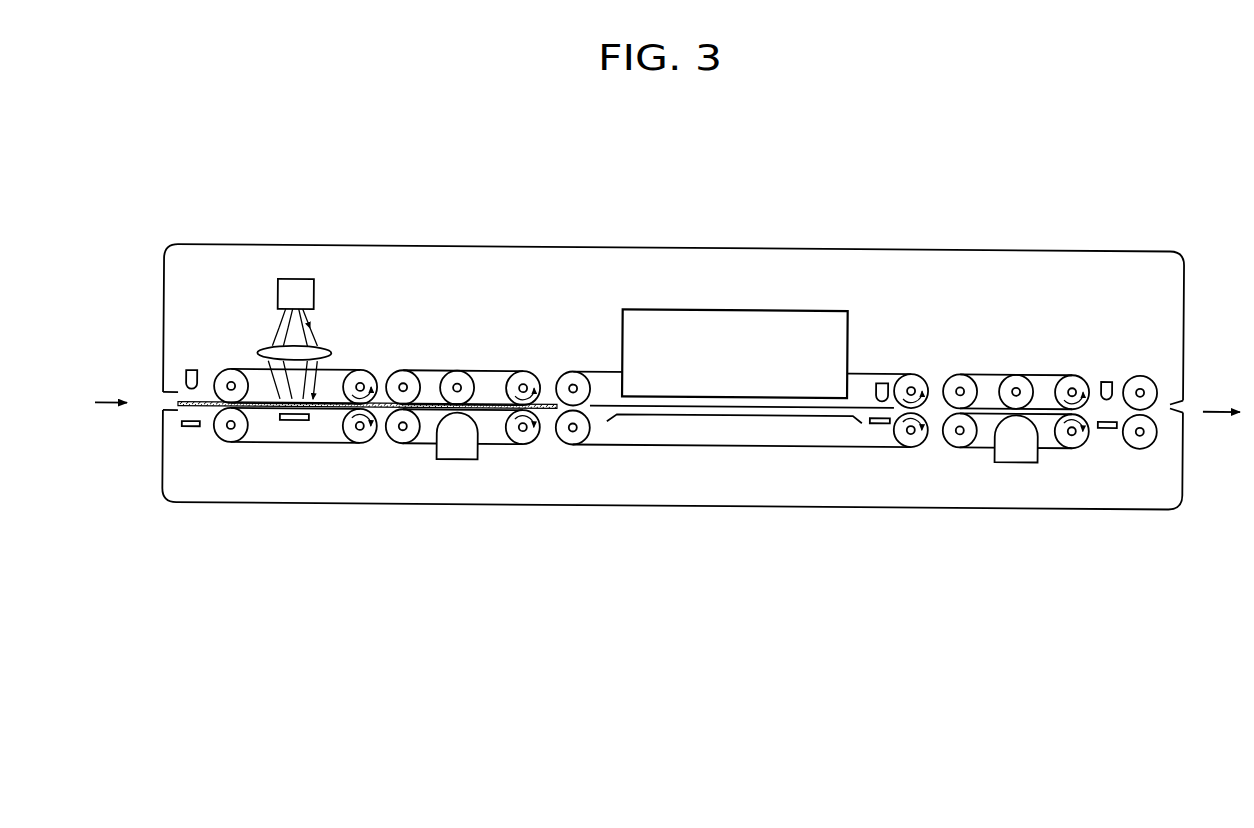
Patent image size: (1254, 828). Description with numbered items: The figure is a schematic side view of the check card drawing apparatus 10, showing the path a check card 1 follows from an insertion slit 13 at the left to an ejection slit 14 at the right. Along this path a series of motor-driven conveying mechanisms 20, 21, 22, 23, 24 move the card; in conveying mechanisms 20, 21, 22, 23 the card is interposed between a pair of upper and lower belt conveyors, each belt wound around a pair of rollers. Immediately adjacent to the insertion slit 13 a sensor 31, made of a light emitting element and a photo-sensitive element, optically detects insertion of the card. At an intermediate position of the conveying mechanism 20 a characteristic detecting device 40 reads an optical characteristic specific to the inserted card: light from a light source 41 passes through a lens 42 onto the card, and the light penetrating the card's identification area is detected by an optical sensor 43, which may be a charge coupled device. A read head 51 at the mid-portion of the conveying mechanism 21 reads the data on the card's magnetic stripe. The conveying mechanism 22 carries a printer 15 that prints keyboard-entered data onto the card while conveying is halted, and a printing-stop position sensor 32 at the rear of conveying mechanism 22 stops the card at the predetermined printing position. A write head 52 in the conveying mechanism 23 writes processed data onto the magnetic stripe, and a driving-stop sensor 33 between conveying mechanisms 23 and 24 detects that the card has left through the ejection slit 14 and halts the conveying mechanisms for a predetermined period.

The check card 1 is at (546, 405).
The check card drawing apparatus 10 is at (892, 246).
The insertion slit 13 is at (165, 398).
The ejection slit 14 is at (1184, 412).
The printer 15 is at (715, 310).
The conveying mechanism 20 is at (252, 442).
The conveying mechanism 21 is at (500, 444).
The conveying mechanism 22 is at (630, 445).
The conveying mechanism 23 is at (1052, 446).
The conveying mechanism 24 is at (1130, 442).
The sensor 31 is at (193, 370).
The printing-stop position sensor 32 is at (882, 382).
The driving-stop sensor 33 is at (1111, 383).
The characteristic detecting device 40 is at (332, 300).
The light source 41 is at (295, 278).
The lens 42 is at (331, 350).
The optical sensor 43 is at (292, 420).
The read head 51 is at (460, 458).
The write head 52 is at (1010, 460).